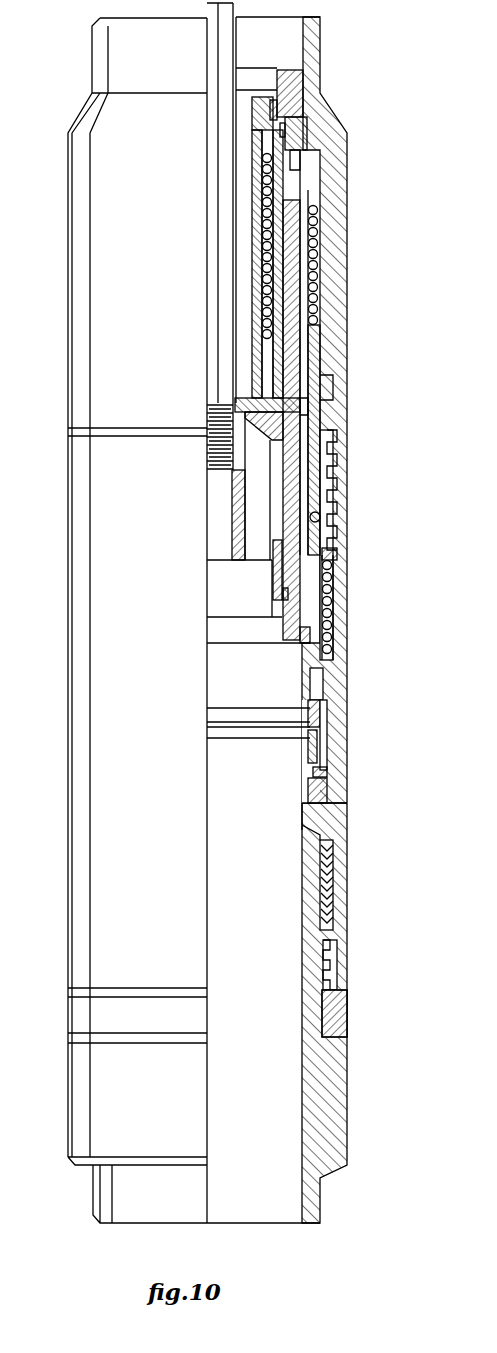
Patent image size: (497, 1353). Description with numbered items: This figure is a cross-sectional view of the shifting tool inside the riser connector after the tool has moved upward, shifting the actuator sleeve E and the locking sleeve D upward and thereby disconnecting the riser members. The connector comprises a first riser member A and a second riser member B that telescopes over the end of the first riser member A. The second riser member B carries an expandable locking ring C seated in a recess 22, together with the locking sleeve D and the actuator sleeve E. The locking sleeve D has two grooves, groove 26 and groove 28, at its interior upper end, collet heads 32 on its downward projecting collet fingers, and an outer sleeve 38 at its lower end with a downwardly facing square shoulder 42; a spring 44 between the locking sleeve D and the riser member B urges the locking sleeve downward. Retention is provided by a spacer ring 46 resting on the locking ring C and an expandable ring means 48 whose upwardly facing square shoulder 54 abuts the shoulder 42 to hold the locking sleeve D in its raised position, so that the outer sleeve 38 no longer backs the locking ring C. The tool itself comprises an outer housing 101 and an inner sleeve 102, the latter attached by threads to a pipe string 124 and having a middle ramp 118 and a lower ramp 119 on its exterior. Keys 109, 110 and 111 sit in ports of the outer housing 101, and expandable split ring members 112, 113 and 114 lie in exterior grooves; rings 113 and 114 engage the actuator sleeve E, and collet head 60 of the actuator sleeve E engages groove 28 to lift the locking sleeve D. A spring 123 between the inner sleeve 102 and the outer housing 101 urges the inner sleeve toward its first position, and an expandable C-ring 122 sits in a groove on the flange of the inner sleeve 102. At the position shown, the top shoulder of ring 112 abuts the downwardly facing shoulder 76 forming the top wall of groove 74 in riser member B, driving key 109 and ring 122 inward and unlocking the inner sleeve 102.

The pipe string 124 is at (228, 52).
The outer housing 101 is at (290, 91).
The expandable C-ring 122 is at (272, 106).
The downwardly facing shoulder 76 is at (312, 118).
The inner sleeve 102 is at (258, 133).
The expandable split ring member 112 is at (310, 143).
The key 109 is at (305, 153).
The groove 74 is at (303, 197).
The spring 123 is at (262, 203).
The actuator sleeve E is at (310, 283).
The groove 26 is at (318, 348).
The expandable split ring member 113 is at (297, 365).
The key 110 is at (288, 380).
The groove 28 is at (316, 383).
The middle ramp 118 is at (220, 410).
The collet head 60 is at (305, 400).
The collet head 32 is at (320, 517).
The locking sleeve D is at (338, 555).
The lower ramp 119 is at (280, 568).
The key 111 is at (282, 592).
The expandable split ring member 114 is at (308, 603).
The spring 44 is at (322, 637).
The downwardly facing square shoulder 42 is at (313, 700).
The upwardly facing square shoulder 54 is at (325, 692).
The expandable ring means 48 is at (318, 732).
The outer sleeve 38 is at (328, 750).
The spacer ring 46 is at (328, 772).
The expandable locking ring C is at (325, 788).
The recess 22 is at (338, 803).
The second riser member B is at (335, 862).
The first riser member A is at (315, 1090).